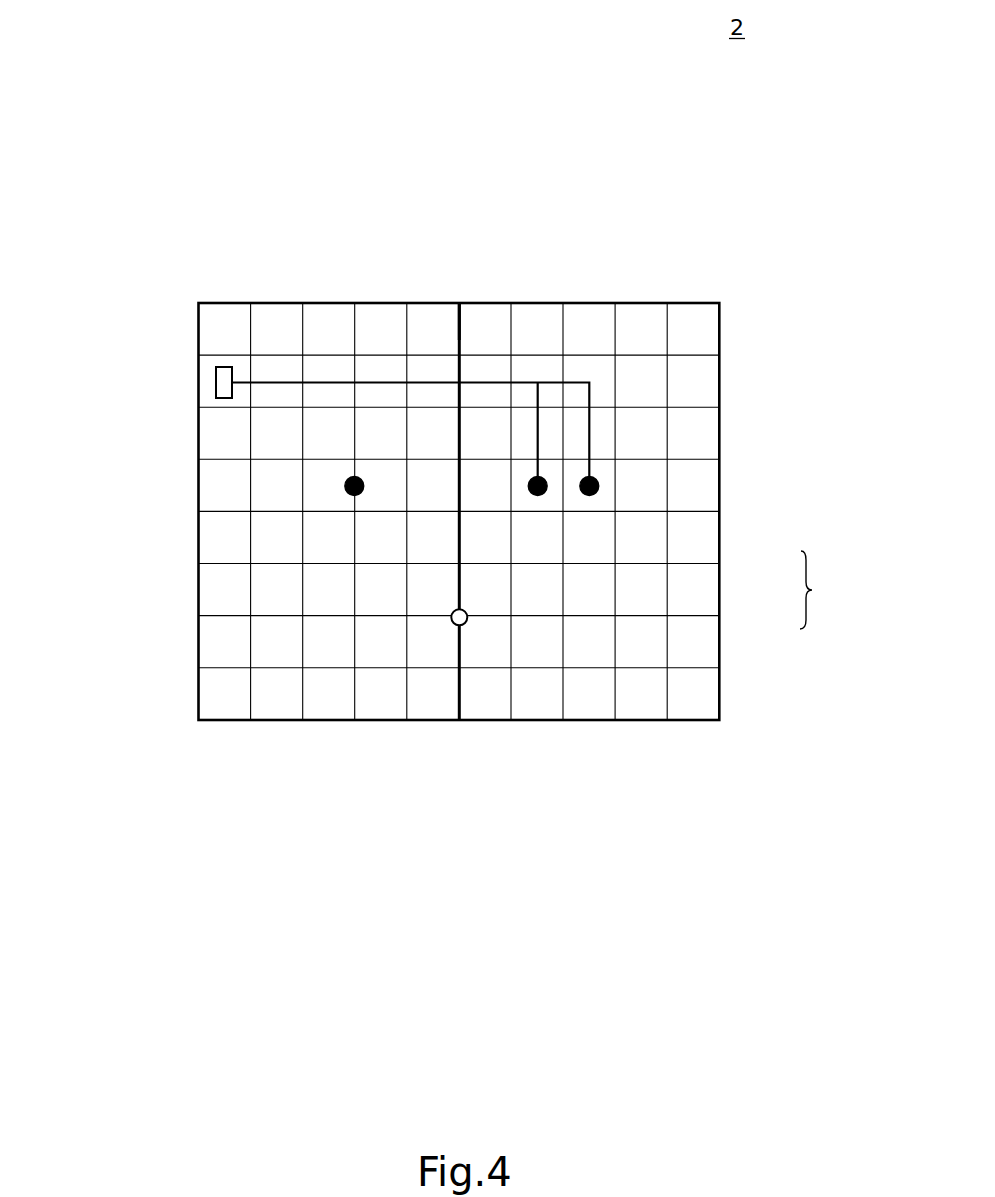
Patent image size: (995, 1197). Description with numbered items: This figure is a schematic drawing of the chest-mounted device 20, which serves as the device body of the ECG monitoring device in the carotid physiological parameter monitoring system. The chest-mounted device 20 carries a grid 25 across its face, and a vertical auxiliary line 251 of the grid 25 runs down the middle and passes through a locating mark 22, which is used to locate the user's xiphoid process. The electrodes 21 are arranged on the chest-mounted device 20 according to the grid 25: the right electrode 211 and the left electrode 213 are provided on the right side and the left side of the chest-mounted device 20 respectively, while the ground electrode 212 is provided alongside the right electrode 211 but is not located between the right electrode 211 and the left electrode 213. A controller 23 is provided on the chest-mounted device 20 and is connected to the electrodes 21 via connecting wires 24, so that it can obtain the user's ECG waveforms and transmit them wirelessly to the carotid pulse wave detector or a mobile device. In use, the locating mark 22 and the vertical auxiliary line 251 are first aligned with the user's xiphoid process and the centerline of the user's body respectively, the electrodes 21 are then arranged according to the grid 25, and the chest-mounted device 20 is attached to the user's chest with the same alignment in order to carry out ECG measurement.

The chest-mounted device 20 is at (643, 303).
The electrodes 21 is at (822, 590).
The right electrode (RA) 211 is at (546, 493).
The ground electrode (G) 212 is at (598, 492).
The left electrode (LA) 213 is at (364, 489).
The locating mark 22 is at (465, 627).
The controller 23 is at (215, 382).
The connecting wires 24 is at (329, 380).
The grid 25 is at (428, 354).
The vertical auxiliary line 251 is at (461, 323).